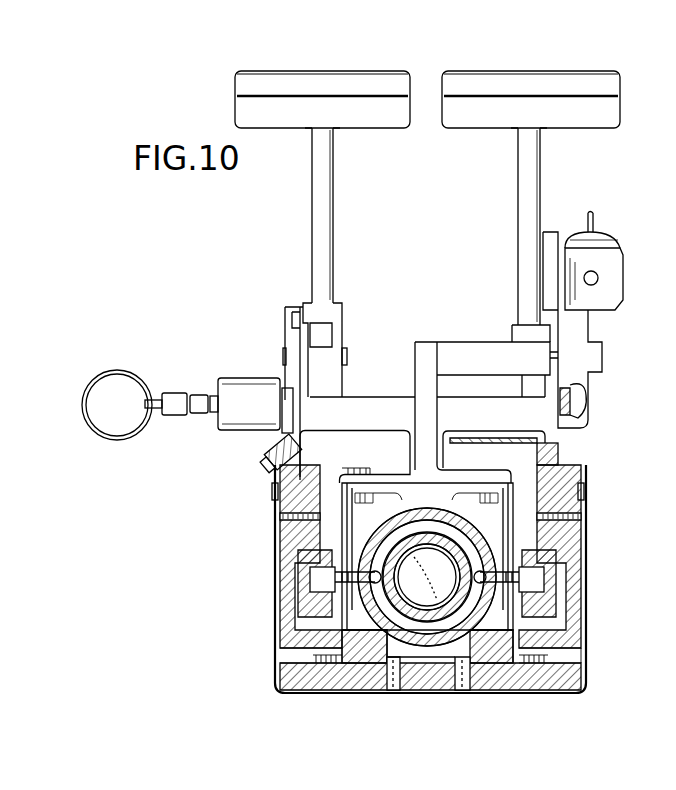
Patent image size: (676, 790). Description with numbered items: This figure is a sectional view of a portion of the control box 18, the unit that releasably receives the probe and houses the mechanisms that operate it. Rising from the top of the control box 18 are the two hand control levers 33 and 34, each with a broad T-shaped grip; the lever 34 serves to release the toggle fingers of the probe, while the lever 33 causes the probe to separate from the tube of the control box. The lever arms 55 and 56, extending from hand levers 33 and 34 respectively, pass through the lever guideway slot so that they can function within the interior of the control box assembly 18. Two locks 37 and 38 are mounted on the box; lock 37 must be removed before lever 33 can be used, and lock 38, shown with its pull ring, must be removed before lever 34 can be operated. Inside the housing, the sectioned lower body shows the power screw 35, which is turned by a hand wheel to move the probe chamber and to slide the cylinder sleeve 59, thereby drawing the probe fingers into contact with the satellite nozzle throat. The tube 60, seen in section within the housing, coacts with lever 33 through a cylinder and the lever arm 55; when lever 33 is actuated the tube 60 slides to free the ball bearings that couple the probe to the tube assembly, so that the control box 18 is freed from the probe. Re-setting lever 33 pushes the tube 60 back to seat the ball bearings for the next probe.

The control box 18 is at (583, 552).
The control lever 33 is at (614, 78).
The control lever 34 is at (250, 75).
The power screw 35 is at (416, 693).
The lock 37 is at (618, 232).
The lock 38 is at (230, 378).
The lever arm 55 is at (418, 358).
The lever arm 56 is at (372, 395).
The cylinder sleeve 59 is at (558, 598).
The tube 60 is at (362, 528).